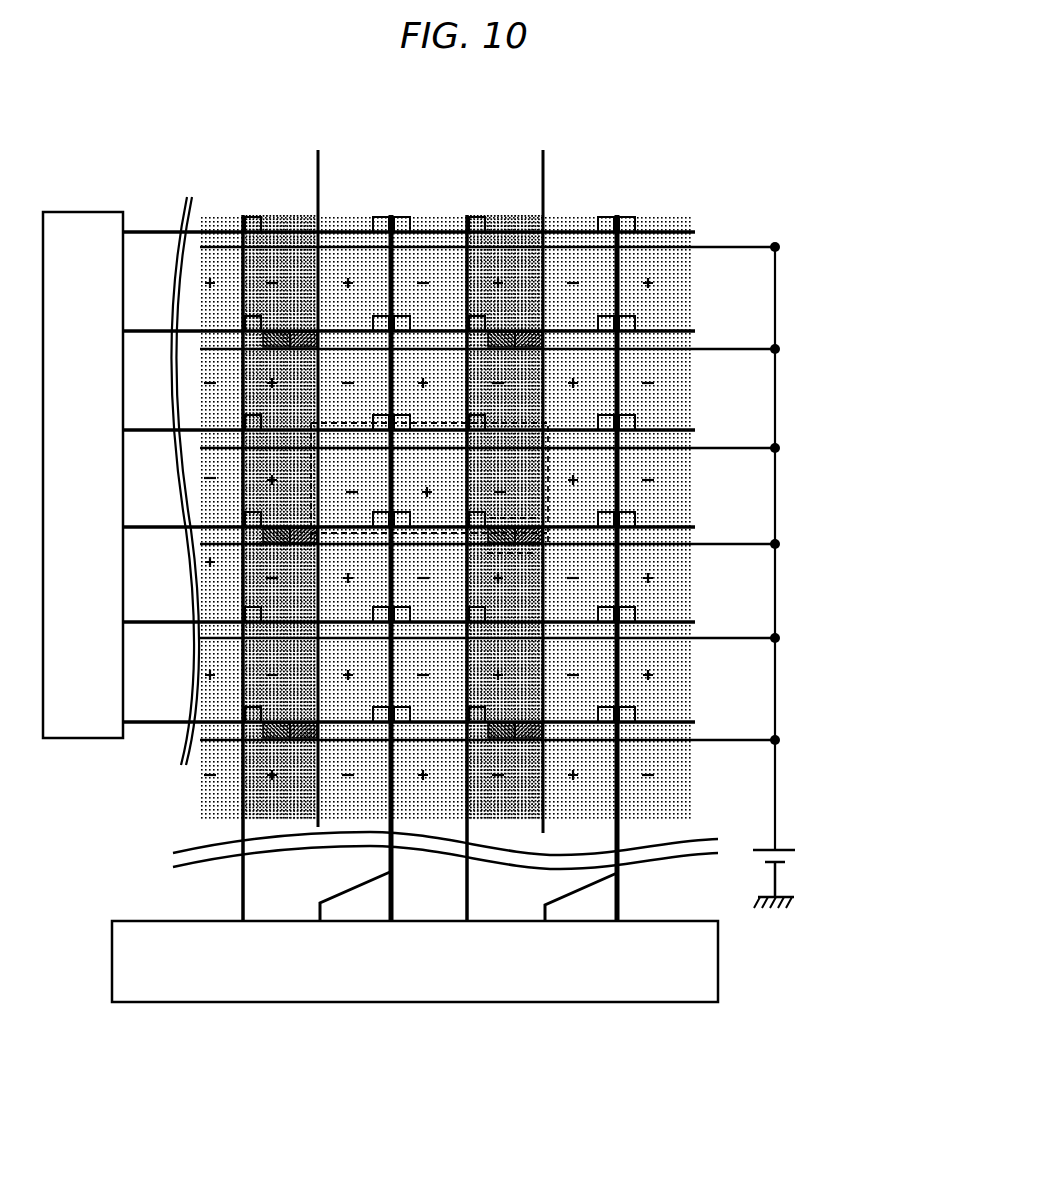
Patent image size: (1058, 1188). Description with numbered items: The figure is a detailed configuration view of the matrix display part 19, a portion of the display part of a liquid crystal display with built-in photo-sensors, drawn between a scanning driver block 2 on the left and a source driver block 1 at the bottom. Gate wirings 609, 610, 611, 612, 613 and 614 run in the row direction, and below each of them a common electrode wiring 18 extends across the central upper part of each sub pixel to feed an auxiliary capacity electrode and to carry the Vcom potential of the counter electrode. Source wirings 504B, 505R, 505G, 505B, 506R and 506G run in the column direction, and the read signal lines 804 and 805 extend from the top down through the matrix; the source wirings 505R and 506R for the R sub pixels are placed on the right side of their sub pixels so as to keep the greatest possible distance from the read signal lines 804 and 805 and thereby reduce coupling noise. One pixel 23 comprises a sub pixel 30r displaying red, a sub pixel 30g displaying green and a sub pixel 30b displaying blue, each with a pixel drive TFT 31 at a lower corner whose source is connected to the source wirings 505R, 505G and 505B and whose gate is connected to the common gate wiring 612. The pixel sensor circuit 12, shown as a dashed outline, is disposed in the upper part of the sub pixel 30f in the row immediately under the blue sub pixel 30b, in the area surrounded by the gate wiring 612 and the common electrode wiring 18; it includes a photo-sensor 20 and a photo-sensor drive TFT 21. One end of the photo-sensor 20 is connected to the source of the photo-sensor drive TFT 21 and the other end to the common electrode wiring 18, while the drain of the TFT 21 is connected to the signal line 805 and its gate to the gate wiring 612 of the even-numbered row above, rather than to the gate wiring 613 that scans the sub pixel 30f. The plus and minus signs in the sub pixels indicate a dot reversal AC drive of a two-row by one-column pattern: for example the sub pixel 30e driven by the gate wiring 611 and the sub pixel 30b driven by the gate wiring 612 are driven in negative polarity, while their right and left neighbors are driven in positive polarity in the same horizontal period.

The signal line drive circuit 1 is at (112, 963).
The scanning line drive circuit 2 is at (82, 740).
The pixel sensor circuit 12 is at (552, 520).
The common electrode wiring 18 is at (775, 805).
The matrix display part 19 is at (178, 184).
The photo-sensor 20 is at (540, 543).
The photo-sensor drive TFT 21 is at (548, 543).
The pixel 23 is at (313, 530).
The pixel drive TFT 31 is at (469, 528).
The sub pixel displaying red color 30r is at (333, 488).
The sub pixel displaying green color 30g is at (405, 488).
The sub pixel displaying blue color 30b is at (523, 477).
The sub pixel 30e is at (520, 402).
The sub pixel 30f is at (505, 605).
The gate wiring 609 is at (409, 222).
The gate wiring 610 is at (409, 321).
The gate wiring 611 is at (409, 419).
The gate wiring 612 is at (409, 515).
The gate wiring 613 is at (409, 612).
The gate wiring 614 is at (409, 710).
The read signal line 804 is at (299, 488).
The read signal line 805 is at (524, 491).
The source wiring 504B is at (219, 568).
The source wiring 505R is at (331, 896).
The source wiring 505G is at (370, 568).
The source wiring 505B is at (444, 568).
The source wiring 506R is at (556, 897).
The source wiring 506G is at (595, 568).